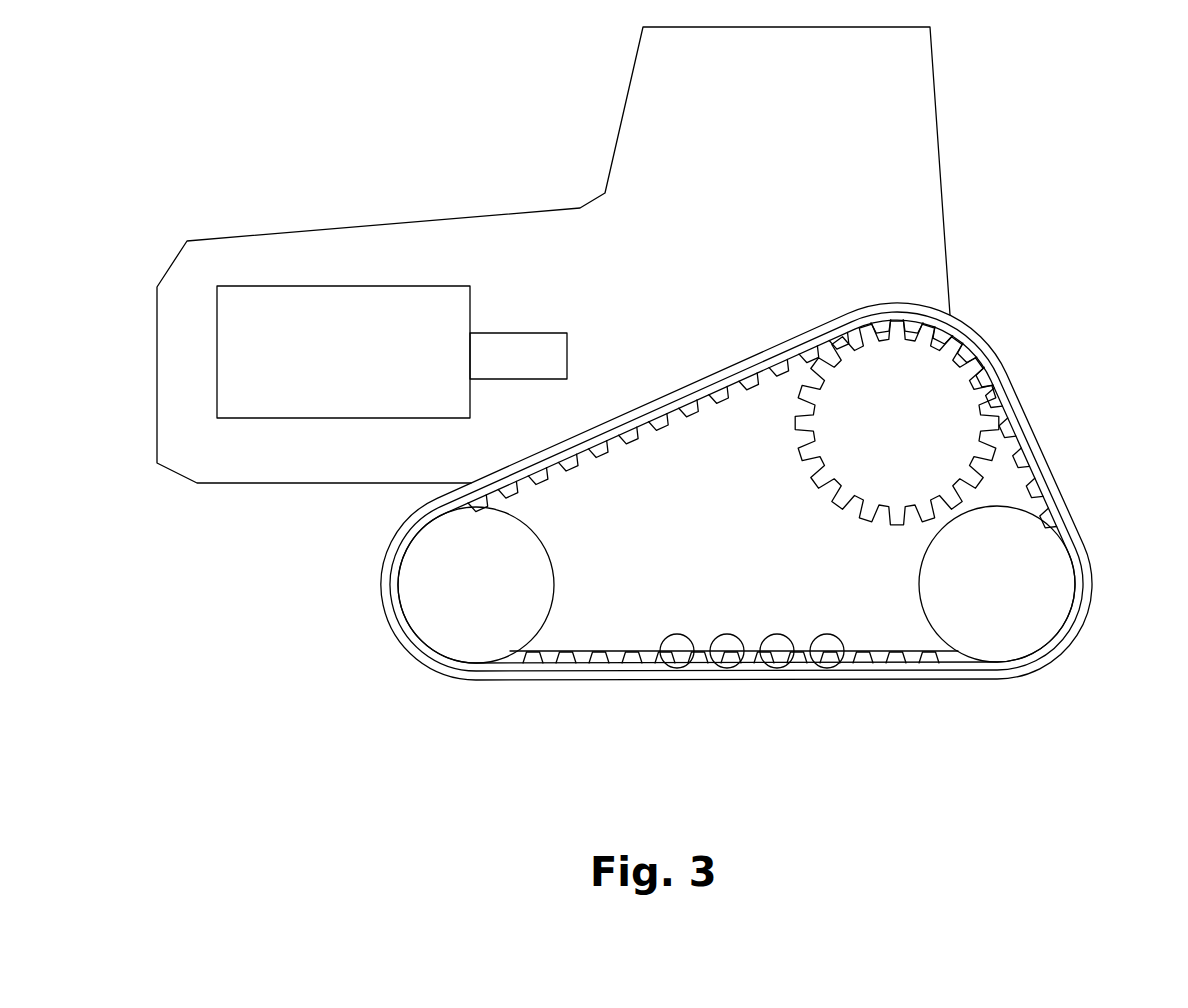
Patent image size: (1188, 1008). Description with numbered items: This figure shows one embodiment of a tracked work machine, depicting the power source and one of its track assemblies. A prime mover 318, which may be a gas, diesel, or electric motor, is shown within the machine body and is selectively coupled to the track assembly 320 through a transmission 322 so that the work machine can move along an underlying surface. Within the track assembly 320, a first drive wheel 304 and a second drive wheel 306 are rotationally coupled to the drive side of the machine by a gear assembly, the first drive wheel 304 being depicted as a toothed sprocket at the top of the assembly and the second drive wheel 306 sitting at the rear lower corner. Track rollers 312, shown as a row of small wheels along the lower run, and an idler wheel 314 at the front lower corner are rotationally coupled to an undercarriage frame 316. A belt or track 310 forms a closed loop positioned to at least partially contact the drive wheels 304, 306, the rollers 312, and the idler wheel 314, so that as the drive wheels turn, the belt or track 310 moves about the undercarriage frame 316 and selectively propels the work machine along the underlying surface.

The first drive wheel 304 is at (923, 437).
The second drive wheel 306 is at (1025, 603).
The belt or track 310 is at (916, 675).
The track rollers 312 is at (677, 658).
The idler wheel 314 is at (497, 607).
The undercarriage frame 316 is at (601, 617).
The prime mover 318 is at (311, 315).
The track assembly 320 is at (1042, 402).
The transmission 322 is at (530, 352).